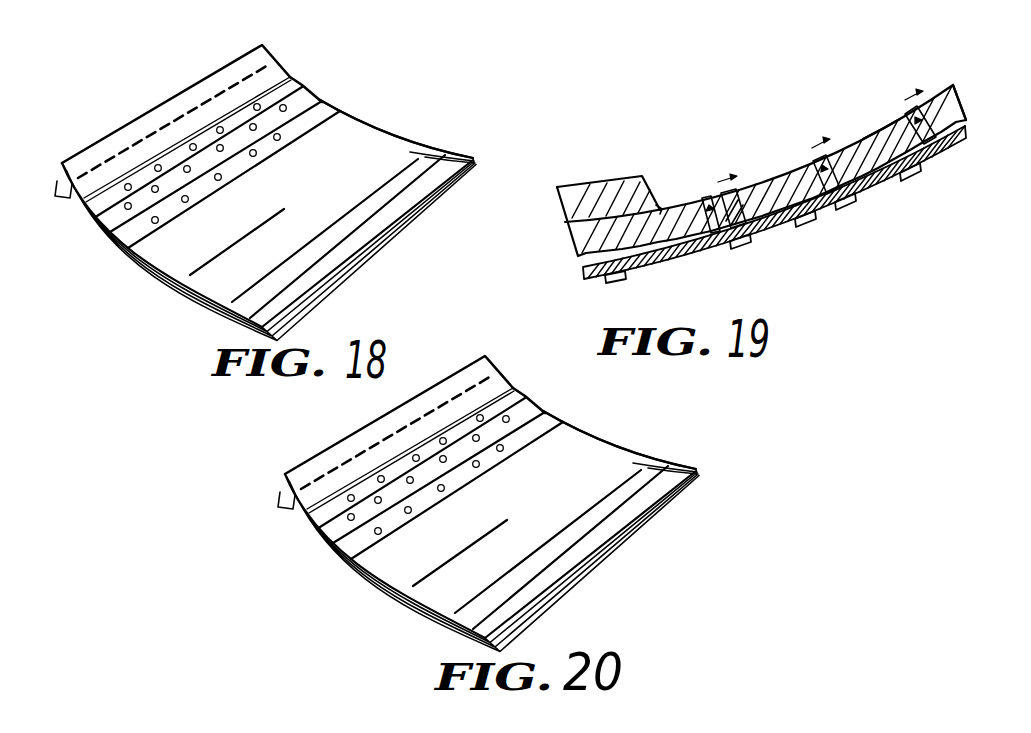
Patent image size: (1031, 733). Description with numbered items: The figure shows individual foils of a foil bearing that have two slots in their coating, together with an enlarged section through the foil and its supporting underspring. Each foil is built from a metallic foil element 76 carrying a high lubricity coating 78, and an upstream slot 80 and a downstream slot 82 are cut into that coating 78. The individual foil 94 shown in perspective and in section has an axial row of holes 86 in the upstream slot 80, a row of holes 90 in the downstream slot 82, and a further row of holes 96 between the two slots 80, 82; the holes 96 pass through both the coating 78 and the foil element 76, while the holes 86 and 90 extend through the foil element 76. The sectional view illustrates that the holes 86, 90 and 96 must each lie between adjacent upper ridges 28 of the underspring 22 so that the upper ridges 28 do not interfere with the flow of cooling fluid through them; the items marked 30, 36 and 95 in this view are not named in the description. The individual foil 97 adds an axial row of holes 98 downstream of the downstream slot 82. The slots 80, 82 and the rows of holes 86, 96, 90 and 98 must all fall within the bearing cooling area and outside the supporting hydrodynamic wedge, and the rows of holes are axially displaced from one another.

In FIG. 19, the underspring 22 is at (603, 280).
In FIG. 19, the upper ridges 28 is at (805, 226).
In FIG. 19, the base rail tab 30 is at (746, 247).
In FIG. 18, the holes 36 is at (157, 165).
In FIG. 18, the foil element 76 is at (136, 266).
In FIG. 19, the foil element 76 is at (965, 98).
In FIG. 20, the foil element 76 is at (379, 594).
In FIG. 18, the high lubricity coating 78 is at (342, 198).
In FIG. 19, the high lubricity coating 78 is at (658, 206).
In FIG. 20, the high lubricity coating 78 is at (563, 511).
In FIG. 18, the upstream slot 80 is at (297, 81).
In FIG. 19, the upstream slot 80 is at (742, 190).
In FIG. 20, the upstream slot 80 is at (519, 403).
In FIG. 18, the downstream slot 82 is at (325, 103).
In FIG. 19, the downstream slot 82 is at (883, 133).
In FIG. 20, the downstream slot 82 is at (547, 415).
In FIG. 19, the holes 86 is at (706, 197).
In FIG. 20, the holes 86 is at (353, 485).
In FIG. 18, the holes 90 is at (260, 155).
In FIG. 19, the holes 90 is at (906, 113).
In FIG. 20, the holes 90 is at (386, 523).
In FIG. 18, the individual foil 94 is at (422, 126).
In FIG. 19, the individual foil 94 is at (577, 178).
In FIG. 19, the shim 95 is at (658, 207).
In FIG. 18, the holes 96 is at (187, 171).
In FIG. 19, the holes 96 is at (812, 160).
In FIG. 20, the holes 96 is at (329, 536).
In FIG. 20, the individual foil 97 is at (633, 435).
In FIG. 20, the holes 98 is at (521, 456).